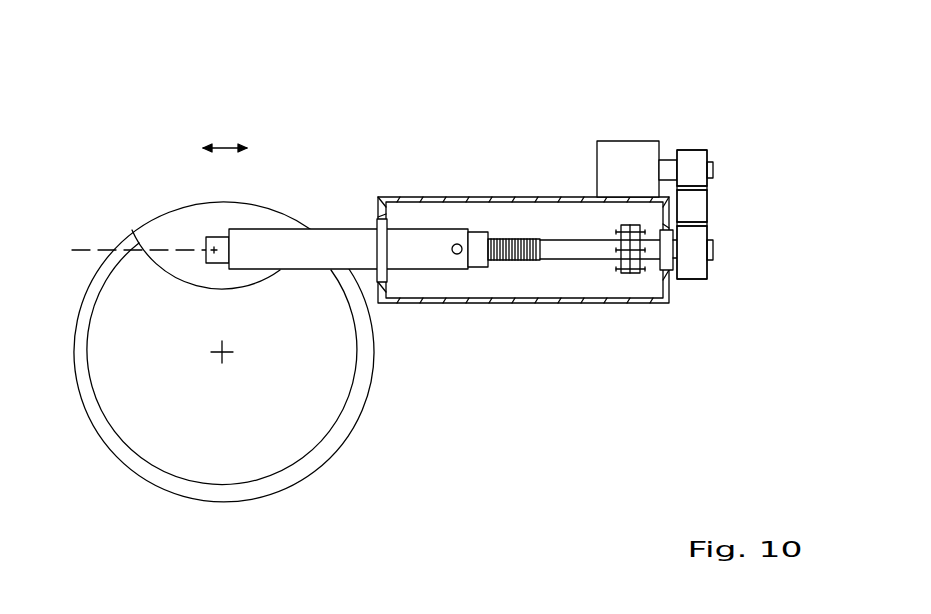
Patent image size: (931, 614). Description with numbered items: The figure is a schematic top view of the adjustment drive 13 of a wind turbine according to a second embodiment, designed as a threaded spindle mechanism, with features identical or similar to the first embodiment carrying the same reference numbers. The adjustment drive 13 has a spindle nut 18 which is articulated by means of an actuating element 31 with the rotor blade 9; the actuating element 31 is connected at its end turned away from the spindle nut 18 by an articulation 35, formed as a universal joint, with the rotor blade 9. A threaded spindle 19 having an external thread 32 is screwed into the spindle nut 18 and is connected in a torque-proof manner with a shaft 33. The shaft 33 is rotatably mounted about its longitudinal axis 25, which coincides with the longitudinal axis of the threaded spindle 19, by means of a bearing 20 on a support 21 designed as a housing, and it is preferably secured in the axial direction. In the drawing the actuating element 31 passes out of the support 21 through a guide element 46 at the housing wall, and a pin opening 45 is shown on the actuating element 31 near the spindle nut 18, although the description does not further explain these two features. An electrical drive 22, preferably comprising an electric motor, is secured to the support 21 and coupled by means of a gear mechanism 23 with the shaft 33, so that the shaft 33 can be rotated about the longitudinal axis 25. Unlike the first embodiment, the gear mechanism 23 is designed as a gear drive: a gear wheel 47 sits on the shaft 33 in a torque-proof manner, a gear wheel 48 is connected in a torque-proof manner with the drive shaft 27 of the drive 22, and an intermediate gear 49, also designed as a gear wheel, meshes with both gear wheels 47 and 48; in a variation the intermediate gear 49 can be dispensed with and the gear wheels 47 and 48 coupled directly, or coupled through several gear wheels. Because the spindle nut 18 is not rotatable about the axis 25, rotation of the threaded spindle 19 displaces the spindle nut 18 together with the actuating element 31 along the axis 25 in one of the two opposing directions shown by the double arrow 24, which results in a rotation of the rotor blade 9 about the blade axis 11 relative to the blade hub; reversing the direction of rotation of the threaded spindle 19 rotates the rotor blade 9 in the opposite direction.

The rotor blade 9 is at (320, 453).
The blade axis 11 is at (220, 352).
The adjustment drive 13 is at (302, 80).
The spindle nut 18 is at (480, 234).
The threaded spindle 19 is at (572, 259).
The bearing 20 is at (668, 270).
The support 21 is at (407, 198).
The electrical drive 22 is at (615, 141).
The gear mechanism 23 is at (750, 177).
The double arrow 24 is at (223, 148).
The longitudinal axis 25 is at (83, 250).
The drive shaft 27 is at (666, 160).
The actuating element 31 is at (352, 229).
The external thread 32 is at (513, 260).
The shaft 33 is at (653, 258).
The articulation 35 is at (210, 237).
The pin hole 45 is at (457, 244).
The guide bushing 46 is at (385, 275).
The gear wheel 47 is at (703, 279).
The gear wheel 48 is at (707, 150).
The intermediate gear 49 is at (695, 205).